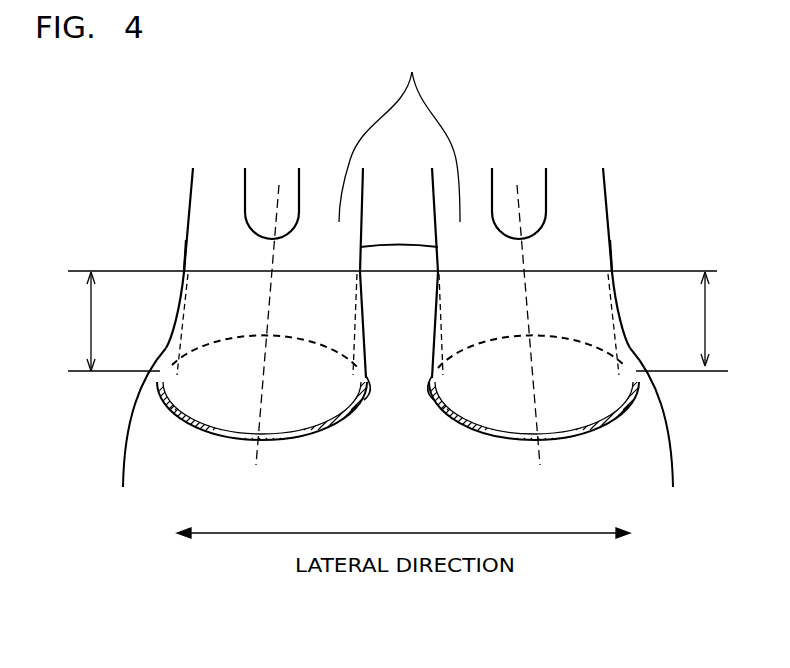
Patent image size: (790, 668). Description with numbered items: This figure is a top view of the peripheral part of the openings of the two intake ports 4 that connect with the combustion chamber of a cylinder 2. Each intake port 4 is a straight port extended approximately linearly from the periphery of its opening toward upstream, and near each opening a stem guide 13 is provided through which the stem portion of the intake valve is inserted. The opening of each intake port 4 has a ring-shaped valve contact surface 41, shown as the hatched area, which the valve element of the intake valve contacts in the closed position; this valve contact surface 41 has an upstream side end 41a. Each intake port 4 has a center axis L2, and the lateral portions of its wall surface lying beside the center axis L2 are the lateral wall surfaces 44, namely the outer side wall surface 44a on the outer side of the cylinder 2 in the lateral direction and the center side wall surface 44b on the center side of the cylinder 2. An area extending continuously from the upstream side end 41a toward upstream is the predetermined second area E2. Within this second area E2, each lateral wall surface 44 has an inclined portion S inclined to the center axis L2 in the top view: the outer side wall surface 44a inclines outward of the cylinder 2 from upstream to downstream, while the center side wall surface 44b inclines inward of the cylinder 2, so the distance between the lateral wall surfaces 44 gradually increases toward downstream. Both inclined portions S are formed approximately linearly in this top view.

The intake port 4 is at (399, 135).
The lateral wall surface 44 is at (188, 217).
The outer side wall surface 44a is at (185, 255).
The center side wall surface 44b is at (432, 221).
The stem guide 13 is at (245, 192).
The inclined portion S is at (172, 322).
The center axis L2 is at (263, 348).
The predetermined second area E2 is at (395, 321).
The valve contact surface 41 is at (327, 428).
The upstream side end 41a is at (432, 386).
The cylinder 2 is at (122, 458).